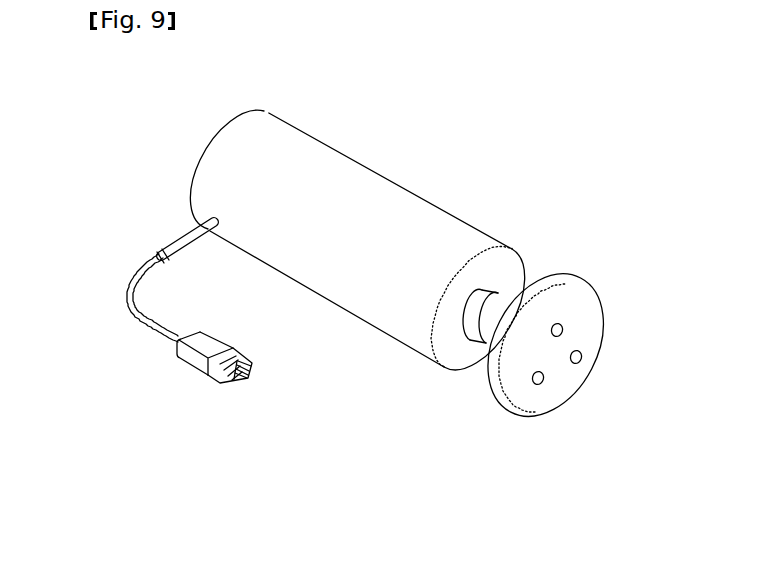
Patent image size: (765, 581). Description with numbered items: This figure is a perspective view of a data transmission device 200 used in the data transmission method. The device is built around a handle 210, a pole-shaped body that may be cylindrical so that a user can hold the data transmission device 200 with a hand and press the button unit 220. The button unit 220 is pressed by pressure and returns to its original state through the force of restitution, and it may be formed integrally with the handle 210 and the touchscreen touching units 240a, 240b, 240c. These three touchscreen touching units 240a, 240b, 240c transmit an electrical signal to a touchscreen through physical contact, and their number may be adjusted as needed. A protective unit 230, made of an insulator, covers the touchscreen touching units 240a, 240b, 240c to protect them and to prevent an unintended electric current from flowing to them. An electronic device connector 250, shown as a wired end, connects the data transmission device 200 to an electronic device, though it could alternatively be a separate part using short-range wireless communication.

The data transmission device 200 is at (390, 303).
The handle 210 is at (381, 177).
The button unit 220 is at (512, 281).
The protective unit 230 is at (491, 406).
The touchscreen touching unit 240a is at (582, 358).
The touchscreen touching unit 240b is at (563, 329).
The touchscreen touching unit 240c is at (542, 384).
The electronic device connector 250 is at (190, 373).